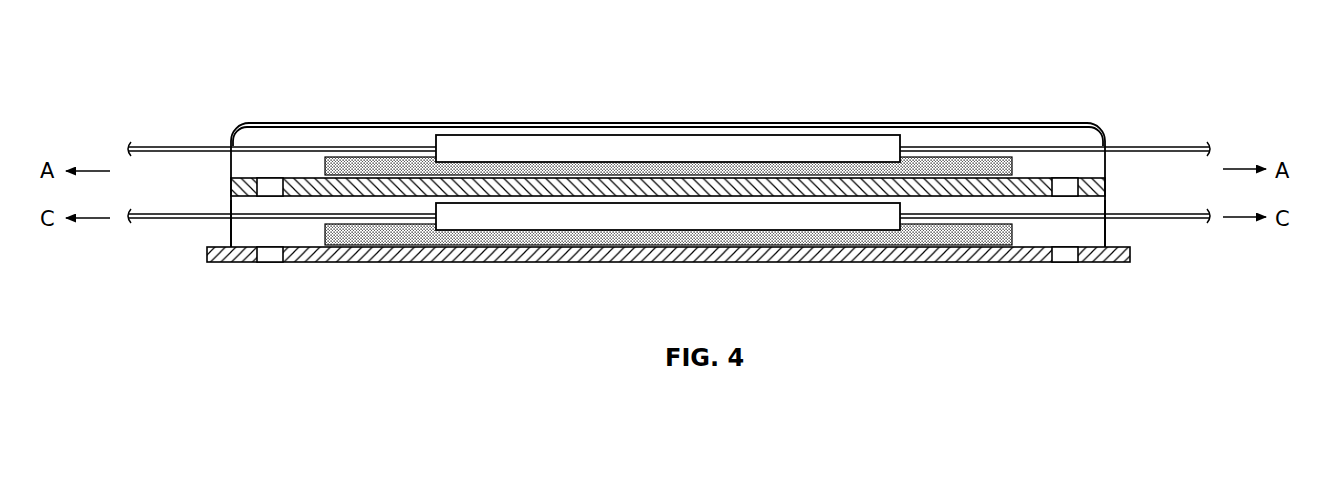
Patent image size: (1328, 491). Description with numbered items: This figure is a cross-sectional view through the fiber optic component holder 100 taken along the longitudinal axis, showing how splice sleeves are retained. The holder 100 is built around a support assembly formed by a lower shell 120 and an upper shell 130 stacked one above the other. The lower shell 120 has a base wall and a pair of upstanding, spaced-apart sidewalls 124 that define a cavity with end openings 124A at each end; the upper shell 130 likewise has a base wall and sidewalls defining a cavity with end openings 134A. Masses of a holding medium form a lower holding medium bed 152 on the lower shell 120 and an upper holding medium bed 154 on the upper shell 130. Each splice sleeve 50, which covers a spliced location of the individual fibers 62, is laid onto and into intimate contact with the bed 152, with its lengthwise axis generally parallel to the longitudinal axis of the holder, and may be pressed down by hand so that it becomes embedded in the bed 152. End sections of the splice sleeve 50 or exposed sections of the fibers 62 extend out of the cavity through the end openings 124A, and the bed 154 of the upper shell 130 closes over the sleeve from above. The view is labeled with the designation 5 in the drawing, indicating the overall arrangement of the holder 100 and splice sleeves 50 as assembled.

The fluid warming system 5 is at (205, 36).
The fiber optic component holder 100 is at (969, 102).
The upper shell 130 is at (307, 122).
The lower shell 120 is at (389, 268).
The sidewalls 124 is at (275, 233).
The end openings 134A is at (220, 161).
The end openings 124A is at (220, 232).
The holding medium bed 154 is at (941, 157).
The holding medium bed 152 is at (963, 238).
The splice sleeve 50 is at (548, 146).
The fibers 62 is at (150, 145).